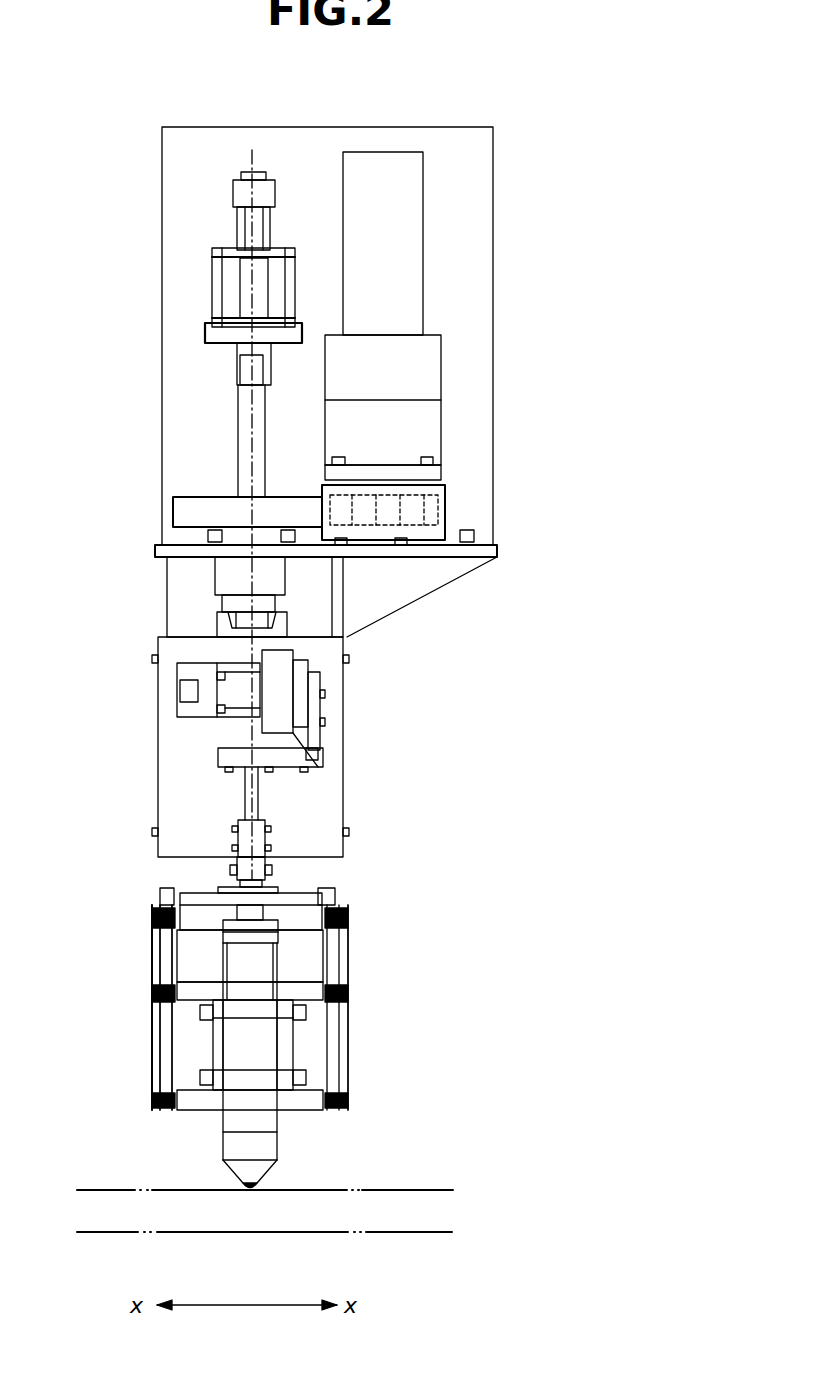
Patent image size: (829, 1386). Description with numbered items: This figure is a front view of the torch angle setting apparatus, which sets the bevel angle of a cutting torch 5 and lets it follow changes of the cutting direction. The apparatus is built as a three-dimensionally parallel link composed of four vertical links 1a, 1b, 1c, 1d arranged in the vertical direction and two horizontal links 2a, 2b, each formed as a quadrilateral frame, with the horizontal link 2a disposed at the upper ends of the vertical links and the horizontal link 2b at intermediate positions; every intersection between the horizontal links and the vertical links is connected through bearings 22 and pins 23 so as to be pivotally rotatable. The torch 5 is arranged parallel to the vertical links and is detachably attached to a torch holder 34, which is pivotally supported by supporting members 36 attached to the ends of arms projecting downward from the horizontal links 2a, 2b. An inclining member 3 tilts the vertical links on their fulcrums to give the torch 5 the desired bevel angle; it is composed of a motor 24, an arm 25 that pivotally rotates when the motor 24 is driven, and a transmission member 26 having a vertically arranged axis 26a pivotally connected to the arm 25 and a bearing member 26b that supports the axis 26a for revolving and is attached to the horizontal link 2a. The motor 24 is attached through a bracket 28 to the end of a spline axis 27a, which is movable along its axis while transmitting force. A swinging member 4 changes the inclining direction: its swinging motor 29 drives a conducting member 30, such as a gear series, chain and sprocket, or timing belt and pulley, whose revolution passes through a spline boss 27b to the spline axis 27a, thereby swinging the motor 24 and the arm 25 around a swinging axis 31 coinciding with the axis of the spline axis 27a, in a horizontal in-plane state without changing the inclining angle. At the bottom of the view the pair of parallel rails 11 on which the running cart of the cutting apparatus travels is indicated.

The vertical link 1a is at (348, 945).
The vertical link 1b is at (327, 1007).
The vertical link 1c is at (152, 948).
The vertical link 1d is at (105, 1007).
The horizontal link 2a is at (290, 905).
The horizontal link 2b is at (177, 975).
The inclining member 3 is at (204, 733).
The swinging member 4 is at (148, 512).
The torch 5 is at (265, 1150).
The rails 11 is at (393, 1233).
The bearings 22 is at (163, 908).
The pins 23 is at (160, 910).
The motor 24 is at (188, 672).
The arm 25 is at (248, 807).
The transmission member 26 is at (398, 772).
The axis 26a is at (275, 883).
The bearing member 26b is at (275, 945).
The spline axis 27a is at (262, 575).
The spline boss 27b is at (193, 503).
The bracket 28 is at (297, 620).
The swinging motor 29 is at (430, 370).
The conducting member 30 is at (285, 505).
The swinging axis 31 is at (247, 430).
The torch holder 34 is at (248, 1083).
The supporting members 36 is at (205, 1012).